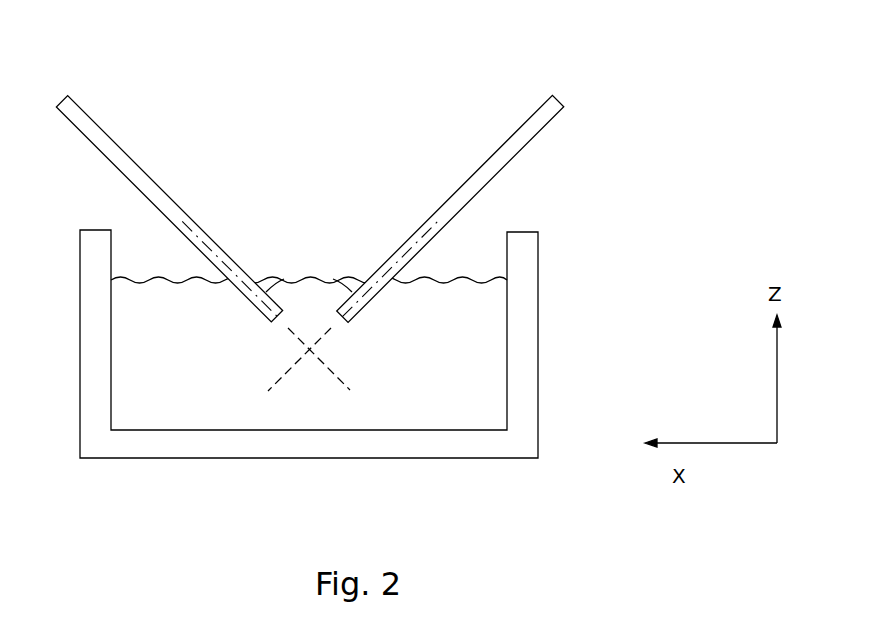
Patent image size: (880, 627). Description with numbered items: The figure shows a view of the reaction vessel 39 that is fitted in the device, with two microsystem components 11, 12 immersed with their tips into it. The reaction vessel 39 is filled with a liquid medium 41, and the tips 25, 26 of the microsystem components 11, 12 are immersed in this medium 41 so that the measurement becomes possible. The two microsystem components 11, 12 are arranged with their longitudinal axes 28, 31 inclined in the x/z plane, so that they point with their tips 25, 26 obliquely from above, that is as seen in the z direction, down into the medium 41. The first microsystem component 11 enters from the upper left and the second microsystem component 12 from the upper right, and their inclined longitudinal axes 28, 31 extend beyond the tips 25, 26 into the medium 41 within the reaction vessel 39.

The microsystem component 11 is at (153, 181).
The microsystem component 12 is at (518, 128).
The tip 25 is at (280, 279).
The tip 26 is at (337, 279).
The longitudinal axis 28 is at (343, 381).
The longitudinal axis 31 is at (293, 366).
The reaction vessel 39 is at (135, 444).
The liquid medium 41 is at (177, 388).